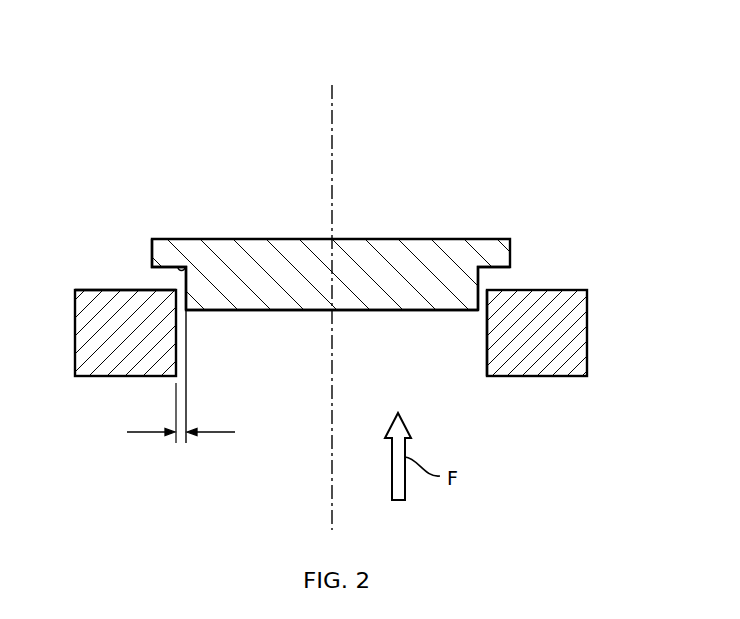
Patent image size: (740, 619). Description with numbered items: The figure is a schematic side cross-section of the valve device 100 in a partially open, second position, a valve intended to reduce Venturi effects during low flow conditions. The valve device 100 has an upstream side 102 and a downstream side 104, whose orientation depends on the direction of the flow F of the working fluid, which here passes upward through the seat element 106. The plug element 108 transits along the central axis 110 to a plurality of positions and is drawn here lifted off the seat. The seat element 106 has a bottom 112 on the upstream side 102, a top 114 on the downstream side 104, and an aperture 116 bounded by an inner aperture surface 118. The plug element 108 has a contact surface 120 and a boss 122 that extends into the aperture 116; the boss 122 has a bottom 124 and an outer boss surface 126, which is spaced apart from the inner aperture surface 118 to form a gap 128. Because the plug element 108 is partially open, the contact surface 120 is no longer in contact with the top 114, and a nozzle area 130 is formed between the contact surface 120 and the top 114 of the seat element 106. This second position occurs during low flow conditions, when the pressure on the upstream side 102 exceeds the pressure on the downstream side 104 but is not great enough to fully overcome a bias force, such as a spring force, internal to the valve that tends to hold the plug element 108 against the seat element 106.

The valve device 100 is at (568, 66).
The upstream side 102 is at (506, 523).
The downstream side 104 is at (506, 128).
The seat element 106 is at (595, 345).
The plug element 108 is at (428, 239).
The central axis 110 is at (332, 107).
The bottom 112 is at (84, 377).
The top 114 is at (93, 290).
The aperture 116 is at (283, 398).
The inner aperture surface 118 is at (487, 372).
The contact surface 120 is at (186, 268).
The boss 122 is at (408, 292).
The bottom 124 is at (400, 311).
The outer boss surface 126 is at (480, 282).
The gap 128 is at (164, 413).
The nozzle area 130 is at (172, 280).